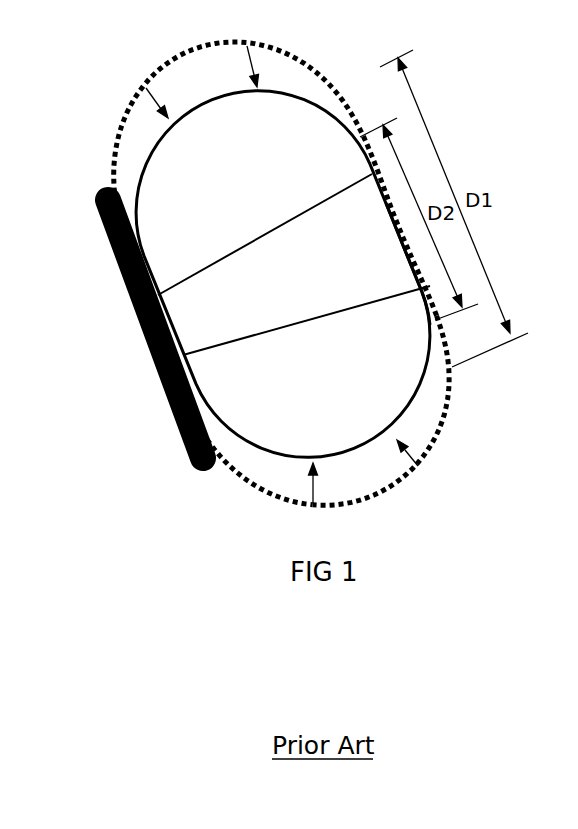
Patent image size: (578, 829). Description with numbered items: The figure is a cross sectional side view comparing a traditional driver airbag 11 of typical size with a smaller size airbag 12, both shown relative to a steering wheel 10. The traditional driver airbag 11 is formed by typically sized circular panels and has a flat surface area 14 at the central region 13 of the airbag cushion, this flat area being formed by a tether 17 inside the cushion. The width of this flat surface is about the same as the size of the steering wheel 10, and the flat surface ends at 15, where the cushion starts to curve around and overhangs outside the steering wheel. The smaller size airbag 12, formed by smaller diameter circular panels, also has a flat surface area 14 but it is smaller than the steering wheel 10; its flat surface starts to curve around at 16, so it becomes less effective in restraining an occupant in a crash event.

The steering wheel 10 is at (163, 387).
The traditional driver airbag 11 is at (130, 108).
The smaller size airbag 12 is at (277, 92).
The central region 13 is at (398, 236).
The flat surface area 14 is at (414, 272).
The end of flat surface area 15 is at (453, 368).
The curve start point 16 is at (435, 315).
The tether 17 is at (285, 224).